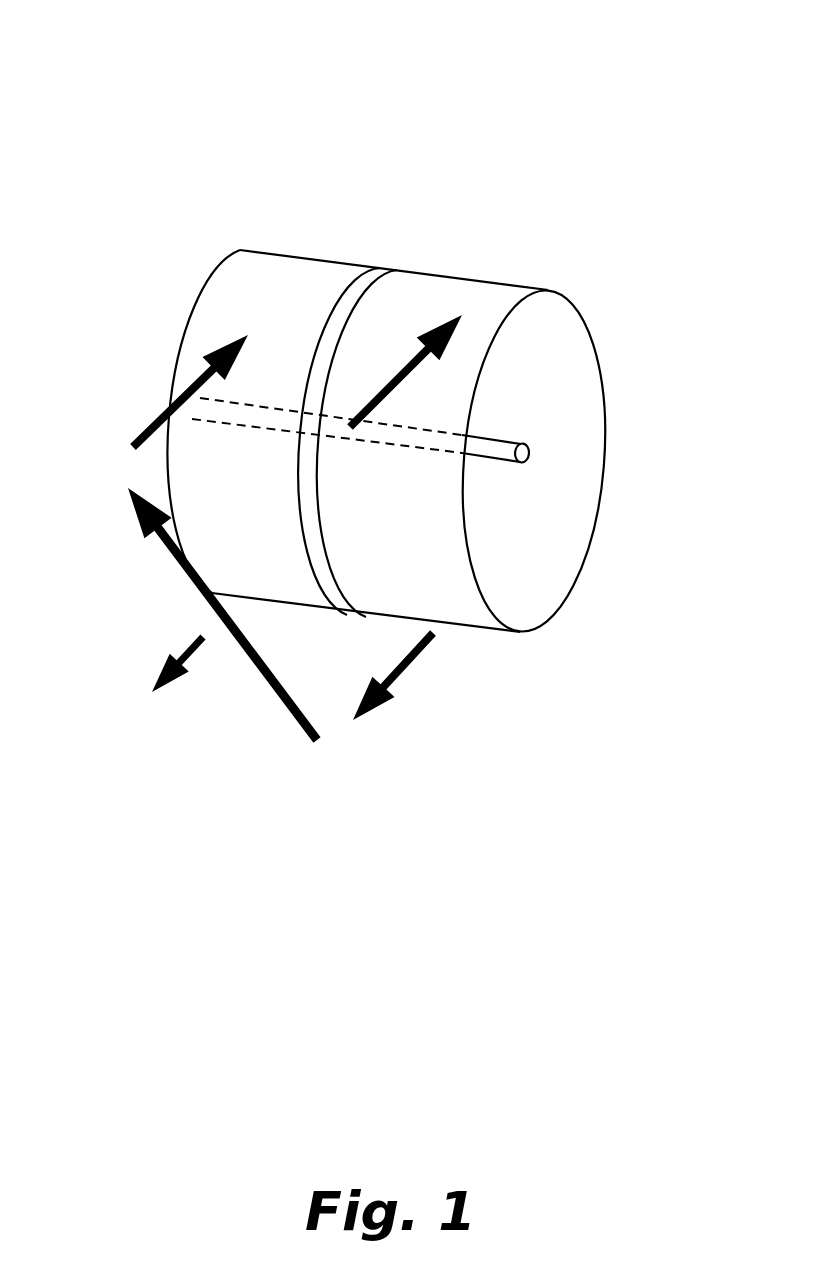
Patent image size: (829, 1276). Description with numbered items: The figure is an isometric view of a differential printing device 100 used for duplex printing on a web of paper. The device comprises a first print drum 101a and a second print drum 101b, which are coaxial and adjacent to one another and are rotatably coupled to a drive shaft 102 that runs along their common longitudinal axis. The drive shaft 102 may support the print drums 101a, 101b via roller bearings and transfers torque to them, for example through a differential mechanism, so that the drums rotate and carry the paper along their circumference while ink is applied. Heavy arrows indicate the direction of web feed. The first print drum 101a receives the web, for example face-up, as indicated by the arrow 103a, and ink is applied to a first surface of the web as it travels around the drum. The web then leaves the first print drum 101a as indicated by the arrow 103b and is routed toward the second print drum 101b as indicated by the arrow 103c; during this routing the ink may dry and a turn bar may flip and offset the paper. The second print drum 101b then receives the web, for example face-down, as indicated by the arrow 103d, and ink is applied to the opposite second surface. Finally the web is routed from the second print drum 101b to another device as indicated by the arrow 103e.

The differential printing device 100 is at (158, 88).
The first print drum 101a is at (578, 310).
The second print drum 101b is at (192, 300).
The drive shaft 102 is at (530, 448).
The arrow 103a is at (404, 365).
The arrow 103b is at (423, 647).
The arrow 103c is at (283, 696).
The arrow 103d is at (195, 650).
The arrow 103e is at (175, 385).